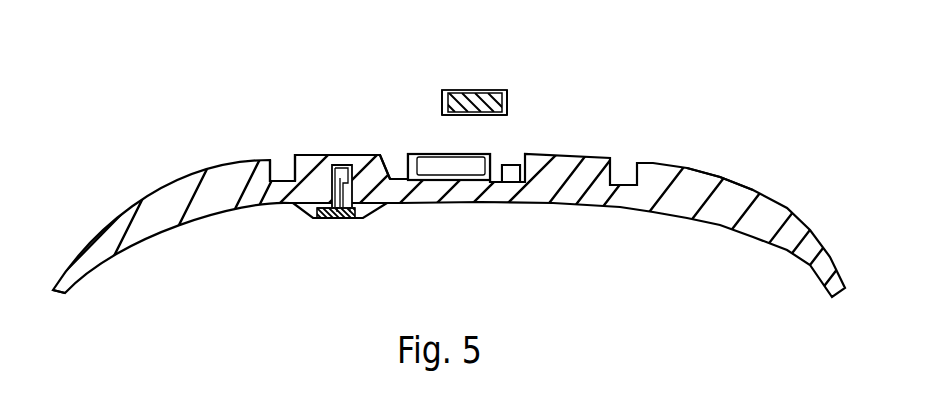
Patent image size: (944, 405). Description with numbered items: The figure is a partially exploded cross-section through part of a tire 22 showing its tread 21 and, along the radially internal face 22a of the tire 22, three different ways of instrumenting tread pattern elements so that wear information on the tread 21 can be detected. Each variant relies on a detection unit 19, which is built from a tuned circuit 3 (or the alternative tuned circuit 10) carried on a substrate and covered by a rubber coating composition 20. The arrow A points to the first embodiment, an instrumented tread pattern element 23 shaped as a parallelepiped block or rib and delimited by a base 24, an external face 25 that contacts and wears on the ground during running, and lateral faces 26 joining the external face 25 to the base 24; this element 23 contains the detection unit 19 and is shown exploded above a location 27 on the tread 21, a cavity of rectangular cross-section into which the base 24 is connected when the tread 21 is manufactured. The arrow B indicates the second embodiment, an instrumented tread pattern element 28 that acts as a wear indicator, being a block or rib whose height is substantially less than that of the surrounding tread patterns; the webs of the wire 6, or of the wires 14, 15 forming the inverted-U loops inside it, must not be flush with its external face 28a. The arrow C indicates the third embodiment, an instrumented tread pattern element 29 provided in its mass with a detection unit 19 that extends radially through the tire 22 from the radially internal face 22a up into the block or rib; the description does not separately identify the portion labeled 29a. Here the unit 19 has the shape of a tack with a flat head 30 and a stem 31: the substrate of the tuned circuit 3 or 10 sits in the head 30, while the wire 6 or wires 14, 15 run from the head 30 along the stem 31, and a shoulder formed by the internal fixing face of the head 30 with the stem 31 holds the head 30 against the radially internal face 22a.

The tuned circuit 3 is at (349, 137).
The tuned circuit 10 is at (323, 222).
The wire 6 is at (252, 152).
The wire 14 is at (252, 152).
The wire 15 is at (294, 180).
The detection unit 19 is at (347, 234).
The rubber coating composition 20 is at (508, 92).
The tread 21 is at (732, 161).
The tire 22 is at (549, 232).
The radially internal face 22a is at (152, 237).
The instrumented tread pattern element 23 is at (463, 65).
The base 24 is at (503, 120).
The external face 25 is at (483, 90).
The lateral faces 26 is at (442, 105).
The location 27 is at (451, 212).
The instrumented tread pattern element 28 is at (459, 211).
The external face 28a is at (507, 165).
The instrumented tread pattern element 29 is at (331, 144).
The opening 29a is at (327, 182).
The flat head 30 is at (383, 209).
The stem 31 is at (351, 176).
The arrow A is at (449, 149).
The arrow B is at (524, 139).
The arrow C is at (323, 243).